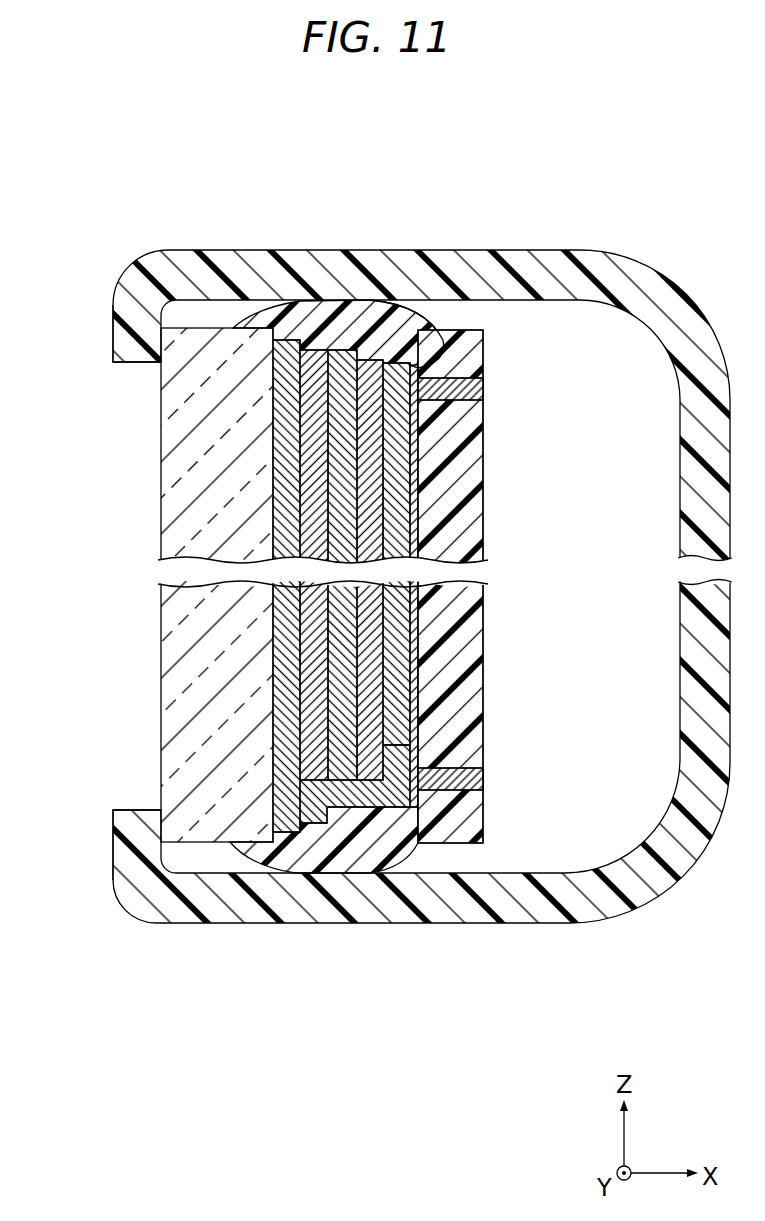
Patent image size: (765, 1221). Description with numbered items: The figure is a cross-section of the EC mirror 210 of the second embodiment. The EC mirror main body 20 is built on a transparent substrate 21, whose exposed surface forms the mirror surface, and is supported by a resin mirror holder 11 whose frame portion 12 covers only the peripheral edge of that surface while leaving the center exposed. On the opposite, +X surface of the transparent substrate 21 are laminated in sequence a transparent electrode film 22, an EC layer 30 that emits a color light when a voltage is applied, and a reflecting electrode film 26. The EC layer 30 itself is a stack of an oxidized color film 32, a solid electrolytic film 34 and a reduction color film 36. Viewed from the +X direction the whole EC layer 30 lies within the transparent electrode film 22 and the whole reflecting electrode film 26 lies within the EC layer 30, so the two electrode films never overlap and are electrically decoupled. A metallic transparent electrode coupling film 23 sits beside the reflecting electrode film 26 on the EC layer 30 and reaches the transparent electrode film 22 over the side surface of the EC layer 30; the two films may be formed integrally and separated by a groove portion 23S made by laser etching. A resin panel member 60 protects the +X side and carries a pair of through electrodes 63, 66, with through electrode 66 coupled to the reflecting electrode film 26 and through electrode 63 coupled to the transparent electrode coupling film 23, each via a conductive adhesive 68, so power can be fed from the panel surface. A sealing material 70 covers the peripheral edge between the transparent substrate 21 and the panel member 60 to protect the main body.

The EC mirror 210 is at (91, 211).
The mirror holder 11 is at (190, 262).
The frame portion 12 is at (118, 340).
The EC mirror main body 20 is at (144, 503).
The transparent substrate 21 is at (172, 400).
The transparent electrode film 22 is at (287, 342).
The EC layer 30 is at (393, 181).
The oxidized color film 32 is at (317, 350).
The solid electrolytic film 34 is at (343, 350).
The reduction color film 36 is at (370, 360).
The reflecting electrode film 26 is at (400, 363).
The transparent electrode coupling film 23 is at (418, 762).
The groove portion 23S is at (419, 745).
The panel member 60 is at (497, 447).
The through electrode 63 is at (482, 812).
The through electrode 66 is at (485, 386).
The conductive adhesive 68 is at (463, 340).
The sealing material 70 is at (316, 862).